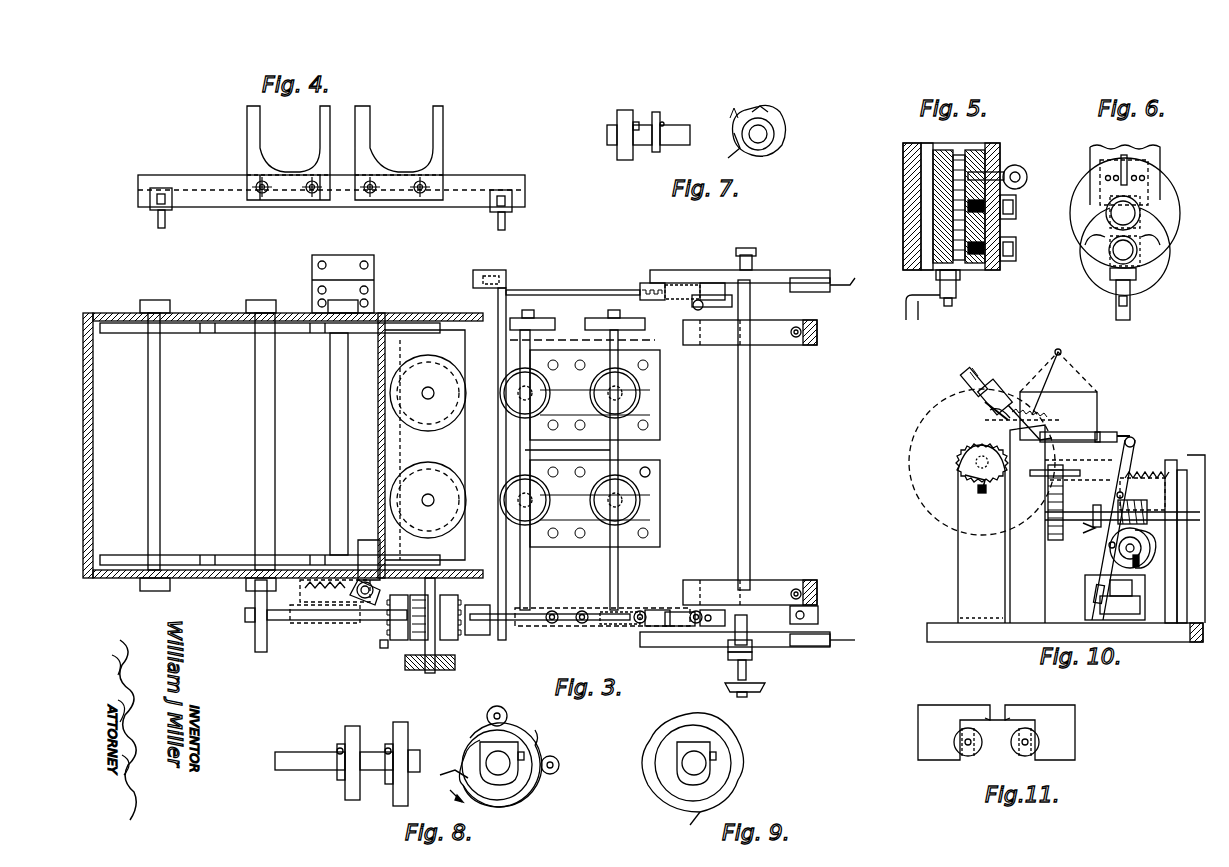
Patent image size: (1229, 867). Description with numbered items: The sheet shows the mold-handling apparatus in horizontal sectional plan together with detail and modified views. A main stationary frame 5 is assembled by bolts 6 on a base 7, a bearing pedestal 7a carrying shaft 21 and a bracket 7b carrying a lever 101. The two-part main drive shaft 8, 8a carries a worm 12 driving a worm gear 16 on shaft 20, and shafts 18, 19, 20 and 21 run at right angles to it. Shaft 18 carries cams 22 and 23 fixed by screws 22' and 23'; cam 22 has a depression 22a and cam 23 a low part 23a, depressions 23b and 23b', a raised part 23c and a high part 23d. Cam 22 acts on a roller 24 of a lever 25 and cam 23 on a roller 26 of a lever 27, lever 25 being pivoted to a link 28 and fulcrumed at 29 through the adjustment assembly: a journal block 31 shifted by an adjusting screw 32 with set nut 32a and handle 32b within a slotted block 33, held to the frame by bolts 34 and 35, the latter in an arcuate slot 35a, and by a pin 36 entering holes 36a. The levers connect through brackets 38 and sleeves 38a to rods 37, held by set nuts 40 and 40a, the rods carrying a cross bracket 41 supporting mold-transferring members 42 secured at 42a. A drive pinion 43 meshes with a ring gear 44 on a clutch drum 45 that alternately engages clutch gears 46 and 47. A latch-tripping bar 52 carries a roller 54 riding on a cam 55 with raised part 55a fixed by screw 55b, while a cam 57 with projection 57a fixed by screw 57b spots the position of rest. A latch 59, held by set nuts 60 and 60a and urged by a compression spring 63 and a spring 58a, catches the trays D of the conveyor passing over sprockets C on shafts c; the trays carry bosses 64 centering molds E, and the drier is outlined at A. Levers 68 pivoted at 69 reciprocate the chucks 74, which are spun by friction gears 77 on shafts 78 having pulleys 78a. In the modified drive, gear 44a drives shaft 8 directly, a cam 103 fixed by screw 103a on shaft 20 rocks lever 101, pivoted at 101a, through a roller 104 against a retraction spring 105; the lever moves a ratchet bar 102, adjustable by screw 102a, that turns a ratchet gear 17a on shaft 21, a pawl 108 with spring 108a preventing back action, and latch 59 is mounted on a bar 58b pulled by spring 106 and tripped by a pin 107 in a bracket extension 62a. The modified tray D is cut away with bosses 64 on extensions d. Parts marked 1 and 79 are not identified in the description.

In FIG. 10, the base 1 is at (1065, 635).
In FIG. 10, the main stationary frame 5 is at (1187, 462).
In FIG. 3, the main stationary frame 5 is at (812, 345).
In FIG. 10, the bolts 6 is at (1190, 634).
In FIG. 3, the bolts 6 is at (652, 470).
In FIG. 3, the base 7 is at (775, 345).
In FIG. 10, the bearing pedestal 7a is at (992, 570).
In FIG. 10, the bracket 7b is at (1085, 605).
In FIG. 3, the main drive shaft section 8 is at (818, 616).
In FIG. 3, the main drive shaft section 8a is at (280, 622).
In FIG. 10, the worm 12 is at (1150, 520).
In FIG. 10, the worm gear 16 is at (1140, 562).
In FIG. 8, the worm gear 16 is at (502, 763).
In FIG. 9, the worm gear 16 is at (696, 763).
In FIG. 10, the ratchet gear 17a is at (1000, 476).
In FIG. 3, the shaft 18 is at (750, 528).
In FIG. 8, the shaft 18 is at (278, 768).
In FIG. 3, the shaft 19 is at (618, 566).
In FIG. 7, the shaft 20 is at (607, 135).
In FIG. 3, the shaft 21 is at (348, 490).
In FIG. 8, the cam 22 is at (416, 768).
In FIG. 9, the cam 22 is at (693, 763).
In FIG. 8, the screw 22' is at (320, 740).
In FIG. 8, the depression 22a is at (458, 775).
In FIG. 8, the cam 23 is at (452, 773).
In FIG. 9, the cam 23 is at (693, 776).
In FIG. 8, the screw 23' is at (376, 732).
In FIG. 8, the low part 23a is at (530, 750).
In FIG. 8, the slight depression 23b is at (531, 741).
In FIG. 8, the slight depression 23b' is at (462, 705).
In FIG. 8, the raised part 23c is at (525, 800).
In FIG. 8, the high part 23d is at (458, 740).
In FIG. 8, the roller 24 is at (507, 712).
In FIG. 3, the lever 25 is at (795, 275).
In FIG. 3, the roller 26 is at (530, 566).
In FIG. 8, the roller 26 is at (560, 766).
In FIG. 3, the lever 27 is at (768, 278).
In FIG. 3, the link or bar 28 is at (680, 285).
In FIG. 3, the pivot 29 is at (825, 280).
In FIG. 5, the pivot or journal block 31 is at (920, 208).
In FIG. 5, the adjusting and retaining screw 32 is at (957, 288).
In FIG. 5, the thrust collar or set nut 32a is at (960, 278).
In FIG. 5, the handle 32b is at (936, 306).
In FIG. 5, the block 33 is at (960, 185).
In FIG. 5, the screw bolt 34 is at (1016, 207).
In FIG. 6, the screw bolt 34 is at (1140, 214).
In FIG. 5, the screw bolt 35 is at (1016, 249).
In FIG. 6, the arcuate slot 35a is at (1137, 249).
In FIG. 5, the positioning pin 36 is at (1020, 167).
In FIG. 6, the positioning pin 36 is at (1128, 170).
In FIG. 6, the positioning holes 36a is at (1110, 185).
In FIG. 4, the rods 37 is at (165, 222).
In FIG. 3, the rods 37 is at (565, 290).
In FIG. 3, the terminal brackets 38 is at (738, 645).
In FIG. 3, the sleeves 38a is at (694, 308).
In FIG. 3, the set nut 40 is at (690, 300).
In FIG. 3, the set nut 40a is at (645, 283).
In FIG. 4, the cross bracket 41 is at (486, 182).
In FIG. 3, the cross bracket 41 is at (473, 286).
In FIG. 4, the mold-transferring and carrying members 42 is at (322, 126).
In FIG. 3, the mold-transferring and carrying members 42 is at (455, 432).
In FIG. 4, the adjustable fastening 42a is at (312, 181).
In FIG. 10, the drive pinion 43 is at (1060, 472).
In FIG. 3, the drive pinion 43 is at (415, 672).
In FIG. 3, the ring gear 44 is at (400, 650).
In FIG. 10, the gear 44a is at (1048, 538).
In FIG. 3, the clutch drum 45 is at (450, 650).
In FIG. 3, the clutch gear 46 is at (445, 650).
In FIG. 3, the clutch gear 47 is at (392, 640).
In FIG. 3, the latch-tripping pitman or bar 52 is at (372, 628).
In FIG. 3, the cam-contacting roller 54 is at (490, 640).
In FIG. 7, the cam 55 is at (620, 158).
In FIG. 3, the cam 55 is at (552, 626).
In FIG. 7, the raised part 55a is at (740, 146).
In FIG. 7, the screw 55b is at (636, 122).
In FIG. 7, the cam 57 is at (660, 118).
In FIG. 7, the raised part or radial projection 57a is at (757, 109).
In FIG. 7, the screw 57b is at (666, 124).
In FIG. 3, the spring 58a is at (640, 626).
In FIG. 10, the bar 58b is at (1010, 425).
In FIG. 10, the latch member 59 is at (1000, 392).
In FIG. 3, the latch member 59 is at (362, 538).
In FIG. 10, the upper set nut 60 is at (982, 372).
In FIG. 10, the lower set nut 60a is at (990, 404).
In FIG. 10, the bracket extension 62a is at (992, 414).
In FIG. 3, the compression spring 63 is at (329, 594).
In FIG. 11, the bosses 64 is at (980, 750).
In FIG. 10, the levers 68 is at (1155, 540).
In FIG. 10, the pivot 69 is at (1090, 530).
In FIG. 3, the chucks 74 is at (666, 512).
In FIG. 10, the continuous motion friction gears 77 is at (1135, 500).
In FIG. 3, the shafts 78 is at (582, 397).
In FIG. 3, the pulleys 78a is at (552, 320).
In FIG. 3, the foot 79 is at (760, 688).
In FIG. 10, the lever 101 is at (1103, 568).
In FIG. 10, the pivot 101a is at (1095, 598).
In FIG. 10, the ratchet bar 102 is at (1070, 429).
In FIG. 10, the turn-buckle or screw 102a is at (1105, 432).
In FIG. 10, the cam 103 is at (1146, 556).
In FIG. 10, the screw 103a is at (1127, 605).
In FIG. 10, the cam roller 104 is at (1124, 587).
In FIG. 10, the retraction spring 105 is at (1150, 475).
In FIG. 10, the retraction spring 106 is at (1032, 428).
In FIG. 10, the pin 107 is at (1030, 368).
In FIG. 10, the pawl or dog 108 is at (965, 476).
In FIG. 10, the spring 108a is at (982, 493).
In FIG. 3, the drier A is at (200, 313).
In FIG. 10, the sprockets C is at (909, 455).
In FIG. 3, the sprockets C is at (235, 334).
In FIG. 3, the shafts c is at (260, 445).
In FIG. 10, the mold carriers or trays D is at (1097, 395).
In FIG. 11, the mold carriers or trays D is at (1068, 708).
In FIG. 11, the extensions d is at (997, 727).
In FIG. 3, the molds E is at (428, 450).